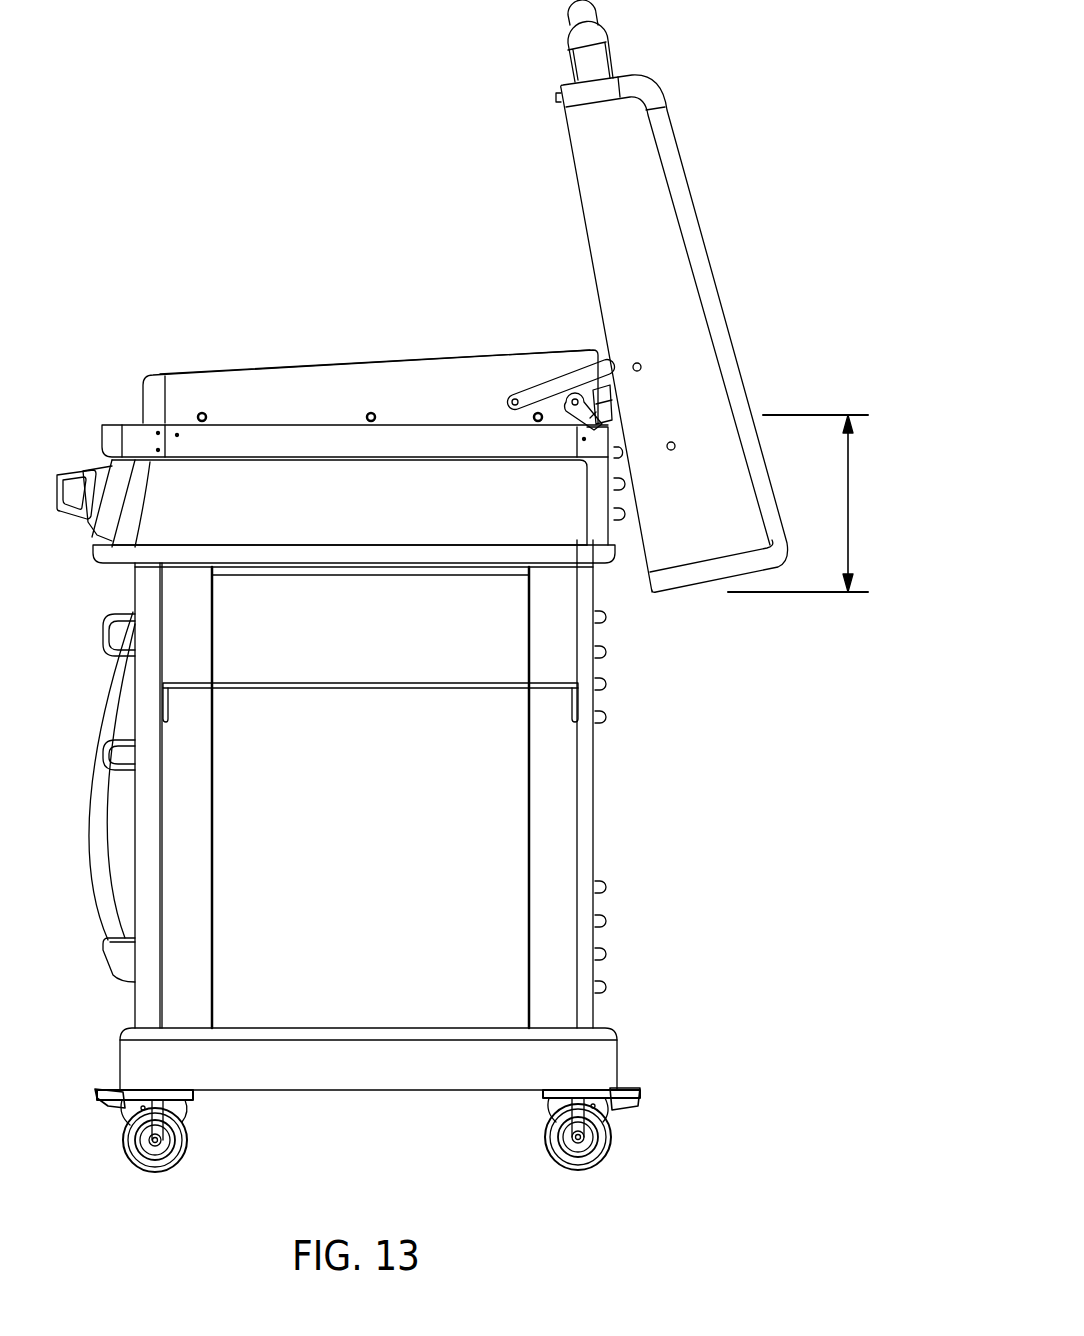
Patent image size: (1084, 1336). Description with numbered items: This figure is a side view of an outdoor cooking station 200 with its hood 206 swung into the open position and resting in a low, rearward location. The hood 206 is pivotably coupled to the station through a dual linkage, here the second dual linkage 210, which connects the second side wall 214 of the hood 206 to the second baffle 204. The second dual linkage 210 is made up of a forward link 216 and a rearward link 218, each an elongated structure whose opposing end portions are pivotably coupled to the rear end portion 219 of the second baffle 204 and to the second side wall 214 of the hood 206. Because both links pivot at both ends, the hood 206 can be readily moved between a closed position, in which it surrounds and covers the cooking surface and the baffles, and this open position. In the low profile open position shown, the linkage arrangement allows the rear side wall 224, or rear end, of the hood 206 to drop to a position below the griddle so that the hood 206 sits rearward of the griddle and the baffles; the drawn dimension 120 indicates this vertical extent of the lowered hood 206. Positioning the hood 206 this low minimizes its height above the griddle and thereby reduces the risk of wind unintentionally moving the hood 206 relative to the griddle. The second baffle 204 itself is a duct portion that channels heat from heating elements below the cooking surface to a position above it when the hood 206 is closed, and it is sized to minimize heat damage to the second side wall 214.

The outdoor cooking station 200 is at (677, 902).
The second baffle 204 is at (252, 360).
The hood 206 is at (700, 188).
The second dual linkage 210 is at (582, 360).
The second side wall 214 is at (708, 362).
The forward link 216 is at (543, 395).
The rearward link 218 is at (588, 410).
The rear end portion 219 is at (505, 378).
The rear side wall 224 is at (700, 585).
The lid opening height 120 is at (852, 515).